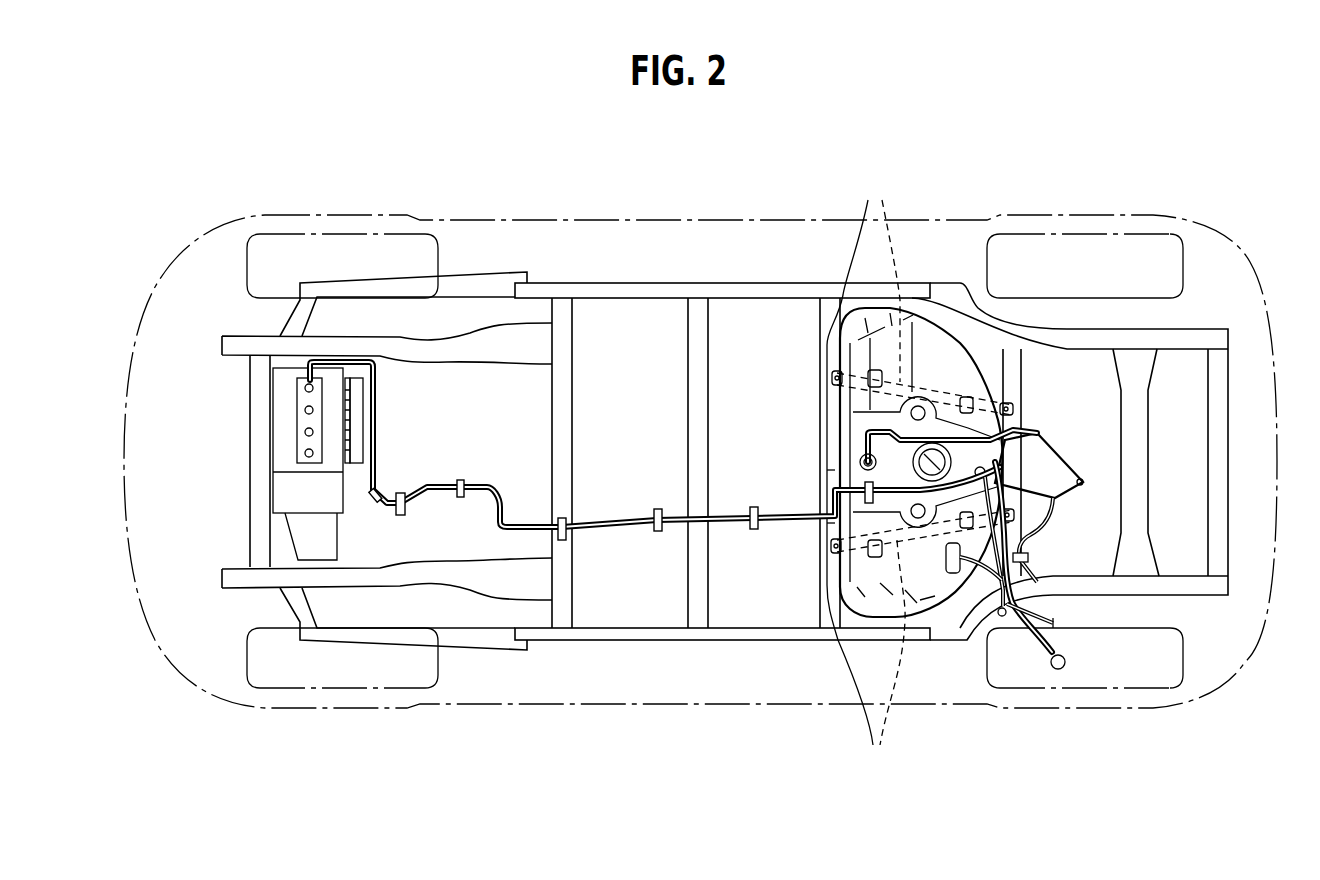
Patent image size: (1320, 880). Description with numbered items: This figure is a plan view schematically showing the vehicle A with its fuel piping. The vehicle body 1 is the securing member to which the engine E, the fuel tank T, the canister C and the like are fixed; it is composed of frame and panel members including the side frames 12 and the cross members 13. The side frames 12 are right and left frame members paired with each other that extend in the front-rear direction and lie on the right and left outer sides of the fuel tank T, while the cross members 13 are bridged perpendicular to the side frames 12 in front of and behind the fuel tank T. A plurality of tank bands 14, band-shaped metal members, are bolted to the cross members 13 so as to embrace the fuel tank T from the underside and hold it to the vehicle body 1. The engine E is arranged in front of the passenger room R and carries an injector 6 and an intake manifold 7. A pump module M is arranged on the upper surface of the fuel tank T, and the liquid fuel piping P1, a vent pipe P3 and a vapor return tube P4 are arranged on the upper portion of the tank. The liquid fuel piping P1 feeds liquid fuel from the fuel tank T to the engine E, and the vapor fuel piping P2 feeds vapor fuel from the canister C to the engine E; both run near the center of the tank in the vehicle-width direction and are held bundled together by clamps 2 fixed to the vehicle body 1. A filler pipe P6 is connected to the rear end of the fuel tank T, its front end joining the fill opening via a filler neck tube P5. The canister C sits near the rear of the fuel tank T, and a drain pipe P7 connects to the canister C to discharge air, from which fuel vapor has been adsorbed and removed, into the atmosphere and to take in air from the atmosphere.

The vehicle A is at (208, 196).
The vehicle body 1 is at (810, 326).
The clamp 2 is at (402, 492).
The injector 6 is at (307, 422).
The intake manifold 7 is at (357, 423).
The side frames 12 is at (582, 290).
The cross members 13 is at (833, 378).
The tank band 14 is at (866, 471).
The engine E is at (283, 447).
The passenger room R is at (640, 340).
The fuel tank T is at (932, 348).
The pump module M is at (1015, 433).
The canister C is at (1038, 468).
The liquid fuel piping P1 is at (827, 480).
The vapor fuel piping P2 is at (827, 523).
The vent pipe P3 is at (860, 455).
The vapor return tube P4 is at (1027, 603).
The filler neck tube P5 is at (953, 620).
The filler pipe P6 is at (1052, 655).
The drain pipe P7 is at (1050, 507).